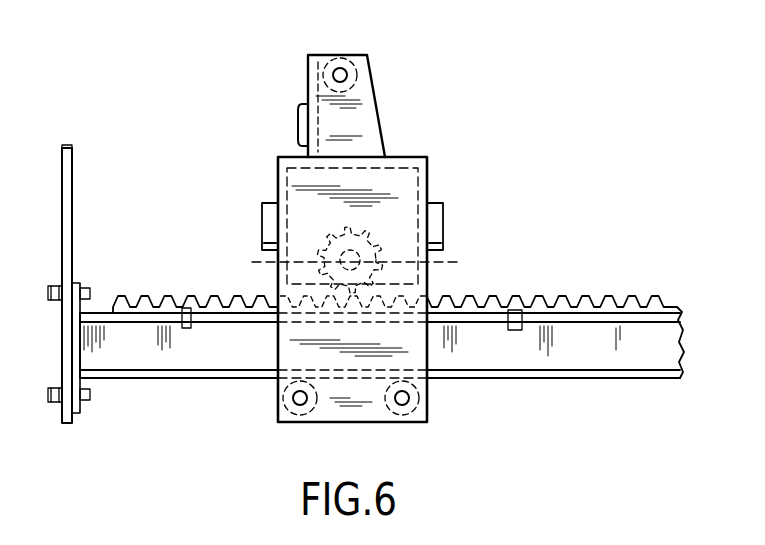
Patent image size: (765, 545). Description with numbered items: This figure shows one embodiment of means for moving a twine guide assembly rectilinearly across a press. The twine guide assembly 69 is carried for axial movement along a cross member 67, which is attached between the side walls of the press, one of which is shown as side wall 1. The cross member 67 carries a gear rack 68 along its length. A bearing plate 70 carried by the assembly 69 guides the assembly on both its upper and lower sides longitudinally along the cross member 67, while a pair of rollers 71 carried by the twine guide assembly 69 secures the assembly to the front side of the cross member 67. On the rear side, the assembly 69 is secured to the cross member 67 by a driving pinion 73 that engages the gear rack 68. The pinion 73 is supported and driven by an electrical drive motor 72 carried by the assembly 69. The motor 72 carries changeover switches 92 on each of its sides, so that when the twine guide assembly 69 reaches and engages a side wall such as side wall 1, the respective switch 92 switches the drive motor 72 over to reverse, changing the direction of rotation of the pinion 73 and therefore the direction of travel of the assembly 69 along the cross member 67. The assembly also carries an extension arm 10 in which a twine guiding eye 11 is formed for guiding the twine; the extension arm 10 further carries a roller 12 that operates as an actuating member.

The side wall 1 is at (62, 180).
The extension arm 10 is at (366, 124).
The twine guiding eye 11 is at (303, 118).
The roller 12 is at (368, 58).
The cross member 67 is at (195, 356).
The gear rack 68 is at (150, 297).
The twine guide assembly 69 is at (427, 180).
The bearing plate 70 is at (412, 351).
The rollers 71 is at (395, 408).
The electrical drive motor 72 is at (369, 267).
The driving pinion 73 is at (282, 262).
The changeover switches 92 is at (257, 224).